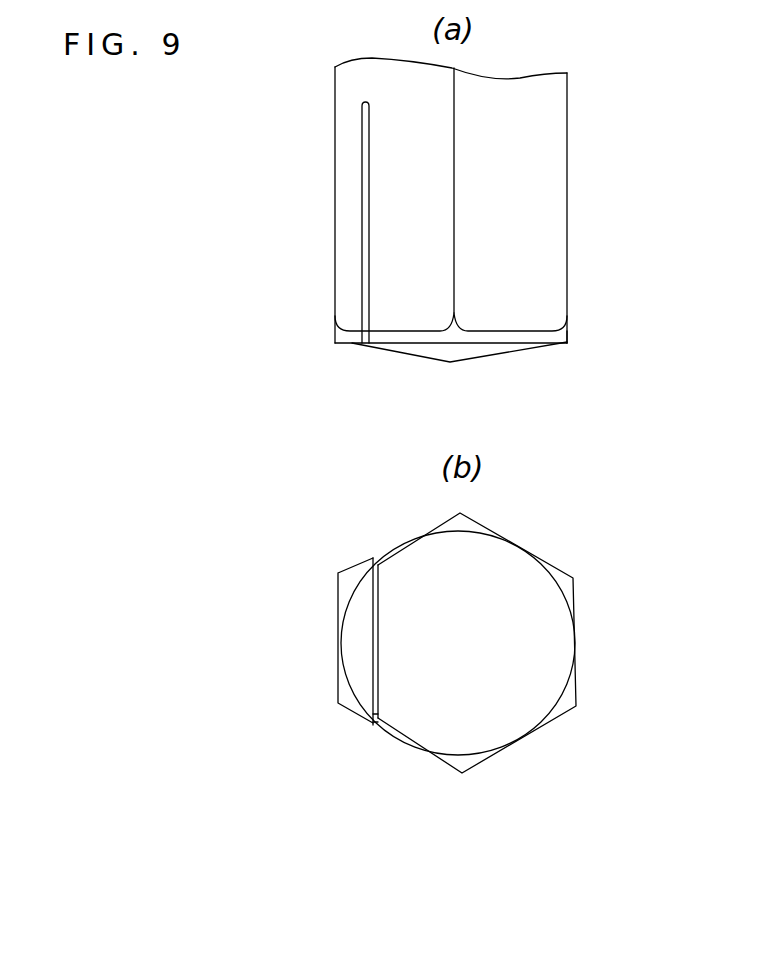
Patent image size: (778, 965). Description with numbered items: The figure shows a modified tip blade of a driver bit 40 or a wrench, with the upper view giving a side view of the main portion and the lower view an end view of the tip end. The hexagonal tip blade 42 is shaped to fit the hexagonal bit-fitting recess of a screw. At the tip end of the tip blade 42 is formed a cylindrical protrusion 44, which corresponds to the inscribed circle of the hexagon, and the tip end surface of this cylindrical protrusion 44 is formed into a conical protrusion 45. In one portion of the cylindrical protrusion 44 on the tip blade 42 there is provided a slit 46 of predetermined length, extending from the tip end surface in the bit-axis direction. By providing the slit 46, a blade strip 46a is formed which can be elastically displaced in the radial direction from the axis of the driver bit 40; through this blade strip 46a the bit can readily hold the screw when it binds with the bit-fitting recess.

The driver bit 40 is at (572, 117).
The tip blade 42 is at (575, 320).
The cylindrical protrusion 44 is at (567, 338).
The conical protrusion 45 is at (487, 350).
The slit 46 is at (367, 343).
The blade strip 46a is at (343, 239).